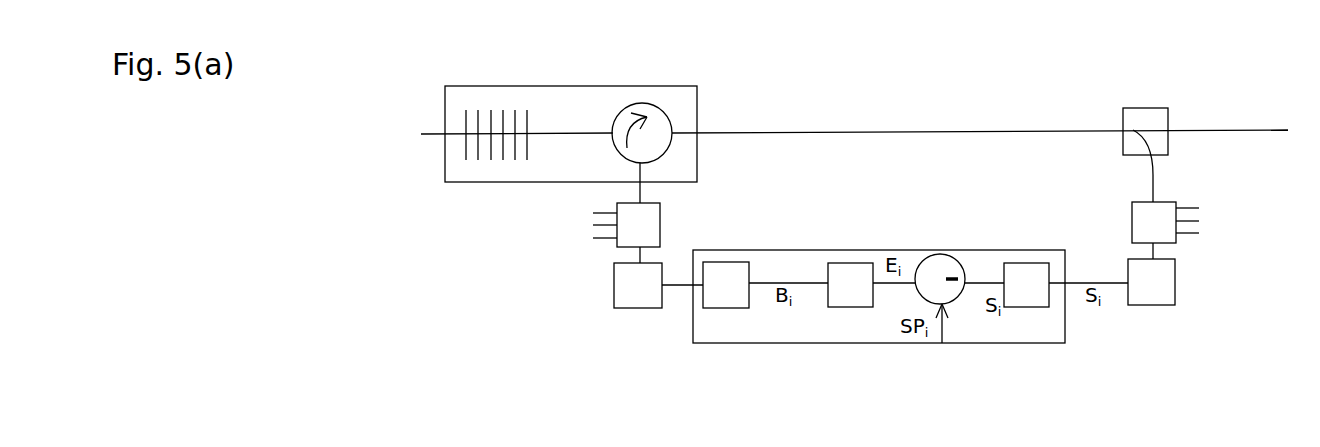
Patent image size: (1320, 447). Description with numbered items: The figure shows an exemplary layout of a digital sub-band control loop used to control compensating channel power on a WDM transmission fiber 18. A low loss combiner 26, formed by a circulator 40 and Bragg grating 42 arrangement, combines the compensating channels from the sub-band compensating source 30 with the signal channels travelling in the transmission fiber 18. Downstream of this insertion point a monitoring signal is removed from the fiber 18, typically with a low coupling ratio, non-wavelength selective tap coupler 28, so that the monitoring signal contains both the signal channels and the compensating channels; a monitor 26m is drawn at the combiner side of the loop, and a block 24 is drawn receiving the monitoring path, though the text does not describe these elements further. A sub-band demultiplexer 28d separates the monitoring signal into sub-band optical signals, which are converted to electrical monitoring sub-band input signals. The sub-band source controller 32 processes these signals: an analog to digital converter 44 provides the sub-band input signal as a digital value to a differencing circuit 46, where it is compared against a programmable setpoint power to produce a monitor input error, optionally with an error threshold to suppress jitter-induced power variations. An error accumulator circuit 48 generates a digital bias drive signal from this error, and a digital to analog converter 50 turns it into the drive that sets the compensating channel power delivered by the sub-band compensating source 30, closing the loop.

The transmission fiber 18 is at (1278, 90).
The controller / processor 24 is at (1175, 292).
The low loss combiner 26 is at (453, 86).
The monitor of source module 26m is at (660, 220).
The output tap coupler 28 is at (1142, 108).
The sub-band demultiplexer 28d is at (1132, 203).
The sub-band compensating source 30 is at (614, 286).
The sub-band source controller 32 is at (907, 249).
The circulator 40 is at (650, 103).
The Bragg grating 42 is at (507, 112).
The analog to digital converter 44 is at (1028, 307).
The differencing circuit 46 is at (957, 302).
The error accumulator circuit 48 is at (847, 307).
The digital to analog converter 50 is at (732, 308).